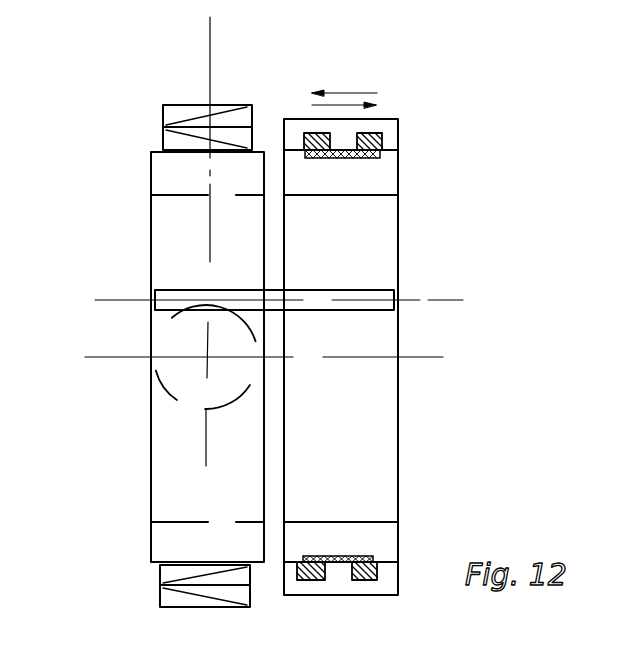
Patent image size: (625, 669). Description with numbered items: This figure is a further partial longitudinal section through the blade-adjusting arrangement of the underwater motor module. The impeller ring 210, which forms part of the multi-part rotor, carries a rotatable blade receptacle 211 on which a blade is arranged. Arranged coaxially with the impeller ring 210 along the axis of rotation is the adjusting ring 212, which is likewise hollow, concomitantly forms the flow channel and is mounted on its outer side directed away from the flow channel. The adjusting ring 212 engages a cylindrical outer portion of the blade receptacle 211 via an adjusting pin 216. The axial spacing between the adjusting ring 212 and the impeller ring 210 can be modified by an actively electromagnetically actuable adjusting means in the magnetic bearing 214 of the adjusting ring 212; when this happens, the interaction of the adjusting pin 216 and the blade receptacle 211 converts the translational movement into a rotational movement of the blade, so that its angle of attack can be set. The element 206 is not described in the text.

The spring 206 is at (180, 108).
The impeller ring 210 is at (152, 172).
The blade receptacle 211 is at (168, 337).
The adjusting ring 212 is at (387, 175).
The magnetic bearing 214 is at (392, 122).
The adjusting pin 216 is at (387, 293).